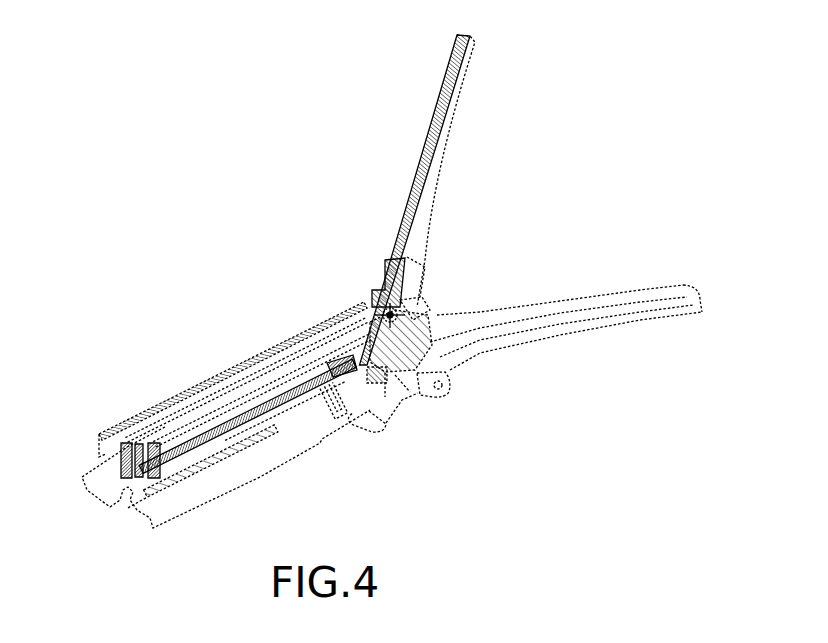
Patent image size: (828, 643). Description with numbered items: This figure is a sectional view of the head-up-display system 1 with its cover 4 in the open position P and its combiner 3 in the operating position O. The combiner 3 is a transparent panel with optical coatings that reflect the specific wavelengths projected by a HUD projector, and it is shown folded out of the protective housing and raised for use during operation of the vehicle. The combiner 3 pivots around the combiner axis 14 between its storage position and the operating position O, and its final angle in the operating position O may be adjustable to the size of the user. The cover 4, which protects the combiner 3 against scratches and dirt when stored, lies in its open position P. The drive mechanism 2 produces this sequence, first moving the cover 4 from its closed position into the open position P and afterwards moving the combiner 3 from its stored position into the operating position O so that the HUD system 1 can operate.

The head-up-display system 1 is at (104, 128).
The drive mechanism 2 is at (103, 508).
The combiner 3 is at (423, 150).
The cover 4 is at (172, 402).
The combiner axis 14 is at (393, 318).
The open position P is at (263, 337).
The operating position O is at (478, 43).